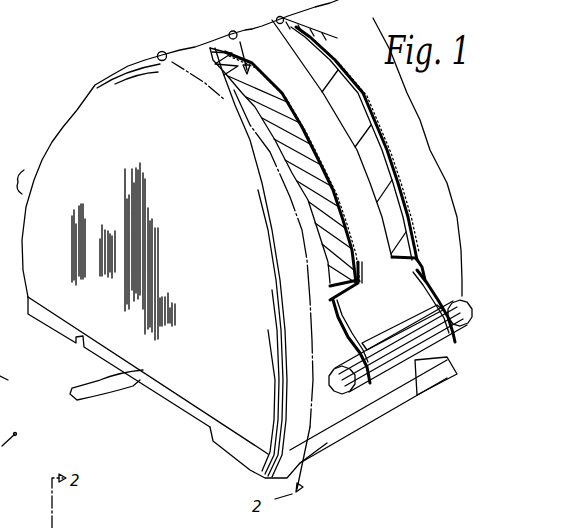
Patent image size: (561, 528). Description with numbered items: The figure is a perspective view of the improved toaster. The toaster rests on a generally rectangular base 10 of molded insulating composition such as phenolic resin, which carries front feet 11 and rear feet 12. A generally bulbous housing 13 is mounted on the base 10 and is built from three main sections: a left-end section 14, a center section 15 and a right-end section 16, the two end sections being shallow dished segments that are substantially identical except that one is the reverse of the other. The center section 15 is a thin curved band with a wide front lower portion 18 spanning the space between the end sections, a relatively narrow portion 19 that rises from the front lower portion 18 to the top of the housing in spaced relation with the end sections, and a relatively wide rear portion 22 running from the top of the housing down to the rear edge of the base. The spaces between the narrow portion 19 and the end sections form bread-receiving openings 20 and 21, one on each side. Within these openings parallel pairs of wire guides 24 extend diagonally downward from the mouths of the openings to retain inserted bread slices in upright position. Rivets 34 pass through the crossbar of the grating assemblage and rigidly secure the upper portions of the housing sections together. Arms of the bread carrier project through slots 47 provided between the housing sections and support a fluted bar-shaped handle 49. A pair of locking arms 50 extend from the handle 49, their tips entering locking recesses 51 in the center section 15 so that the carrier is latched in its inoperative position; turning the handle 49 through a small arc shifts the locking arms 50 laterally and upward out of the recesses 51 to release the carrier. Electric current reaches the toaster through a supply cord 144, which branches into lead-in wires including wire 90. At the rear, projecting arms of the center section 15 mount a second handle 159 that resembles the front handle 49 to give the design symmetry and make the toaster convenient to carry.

The base 10 is at (173, 404).
The front feet 11 is at (247, 461).
The rear feet 12 is at (60, 325).
The housing 13 is at (63, 89).
The left-end section 14 is at (120, 70).
The center section 15 is at (187, 43).
The right-end section 16 is at (339, 32).
The front lower portion 18 is at (385, 390).
The narrow portion 19 is at (350, 173).
The bread-receiving opening 20 is at (229, 35).
The bread-receiving opening 21 is at (347, 104).
The rear portion 22 is at (275, 25).
The wire guides 24 is at (371, 135).
The rivets 34 is at (158, 55).
The slots 47 is at (337, 301).
The handle 49 is at (392, 360).
The locking arms 50 is at (423, 293).
The locking recesses 51 is at (411, 276).
The wire 90 is at (13, 434).
The supply cord 144 is at (107, 384).
The handle 159 is at (30, 170).